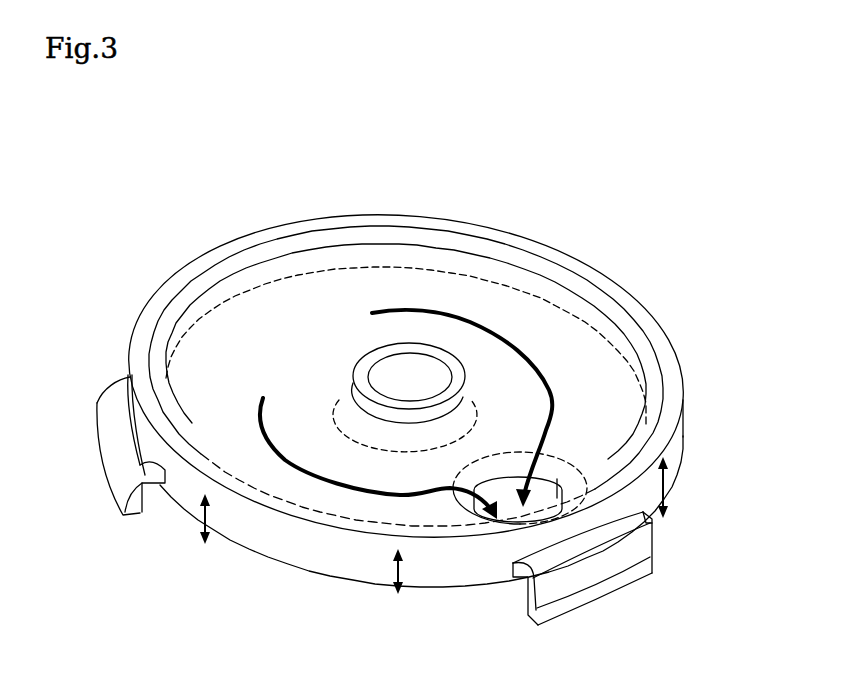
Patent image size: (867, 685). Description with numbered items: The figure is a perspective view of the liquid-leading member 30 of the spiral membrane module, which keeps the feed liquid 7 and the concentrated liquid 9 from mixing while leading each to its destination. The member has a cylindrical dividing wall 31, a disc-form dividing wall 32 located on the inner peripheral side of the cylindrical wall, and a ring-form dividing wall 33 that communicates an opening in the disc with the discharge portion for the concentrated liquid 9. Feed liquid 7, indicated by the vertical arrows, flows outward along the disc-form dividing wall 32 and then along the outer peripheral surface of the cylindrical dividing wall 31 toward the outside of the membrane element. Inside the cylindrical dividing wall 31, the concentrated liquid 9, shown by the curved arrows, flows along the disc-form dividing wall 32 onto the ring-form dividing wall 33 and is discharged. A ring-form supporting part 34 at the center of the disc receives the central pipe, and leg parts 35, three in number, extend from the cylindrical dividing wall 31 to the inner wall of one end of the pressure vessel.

The liquid-leading member 30 is at (493, 214).
The dividing wall 31 is at (667, 338).
The dividing wall 32 is at (360, 290).
The dividing wall 33 is at (557, 479).
The supporting part 34 is at (354, 382).
The leg parts 35 is at (658, 522).
The concentrated liquid 9 is at (553, 394).
The feed liquid 7 is at (212, 534).